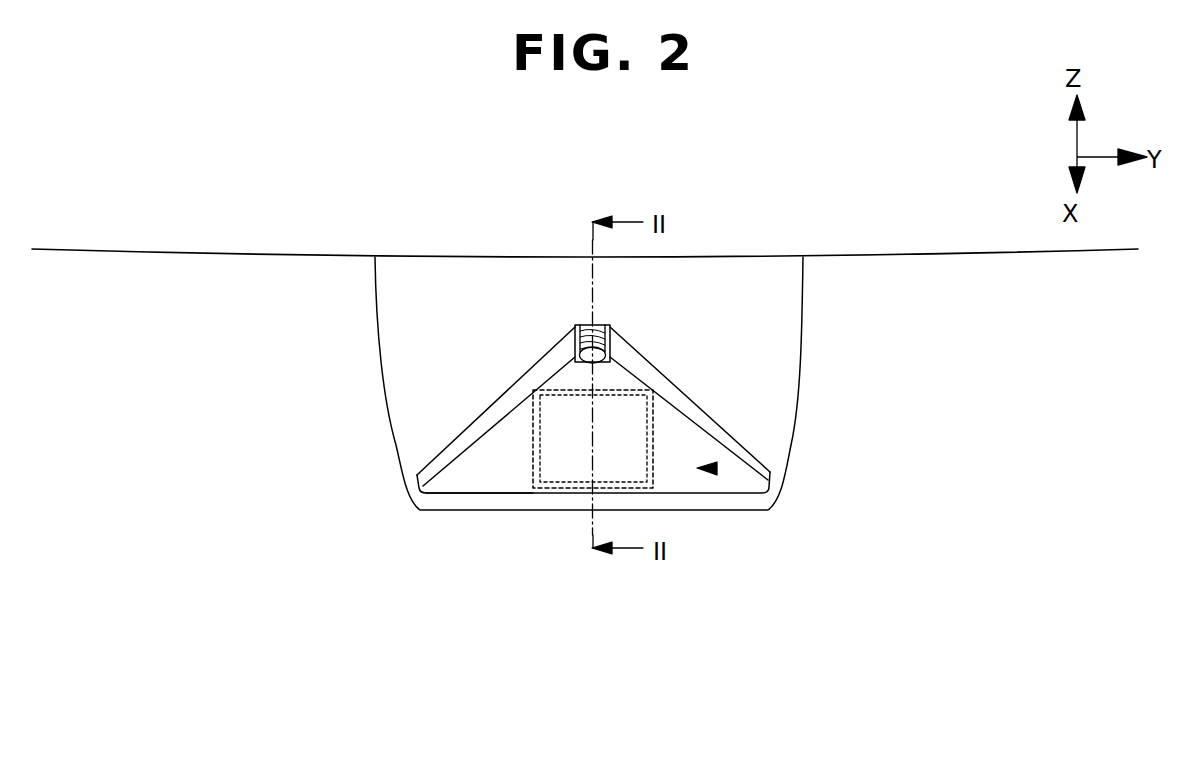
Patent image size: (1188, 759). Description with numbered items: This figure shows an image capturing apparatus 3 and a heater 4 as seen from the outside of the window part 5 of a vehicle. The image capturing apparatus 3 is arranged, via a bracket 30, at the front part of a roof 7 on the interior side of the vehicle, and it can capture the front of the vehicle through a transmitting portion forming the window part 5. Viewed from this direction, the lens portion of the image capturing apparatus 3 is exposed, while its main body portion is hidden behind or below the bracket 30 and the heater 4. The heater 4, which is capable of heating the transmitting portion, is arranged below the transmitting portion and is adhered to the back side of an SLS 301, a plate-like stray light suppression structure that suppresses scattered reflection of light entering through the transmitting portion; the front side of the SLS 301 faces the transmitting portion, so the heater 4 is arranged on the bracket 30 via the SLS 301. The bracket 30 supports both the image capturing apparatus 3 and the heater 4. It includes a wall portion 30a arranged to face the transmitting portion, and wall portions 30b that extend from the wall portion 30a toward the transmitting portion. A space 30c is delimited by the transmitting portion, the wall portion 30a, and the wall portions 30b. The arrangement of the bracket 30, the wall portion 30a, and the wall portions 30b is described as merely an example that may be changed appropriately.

The roof 7 is at (509, 191).
The window part 5 is at (248, 354).
The image capturing apparatus 3 is at (575, 325).
The bracket 30 is at (377, 333).
The wall portion 30a is at (477, 483).
The wall portions 30b is at (480, 427).
The space 30c is at (717, 469).
The SLS (stray light suppression structure) 301 is at (533, 462).
The heater 4 is at (567, 481).